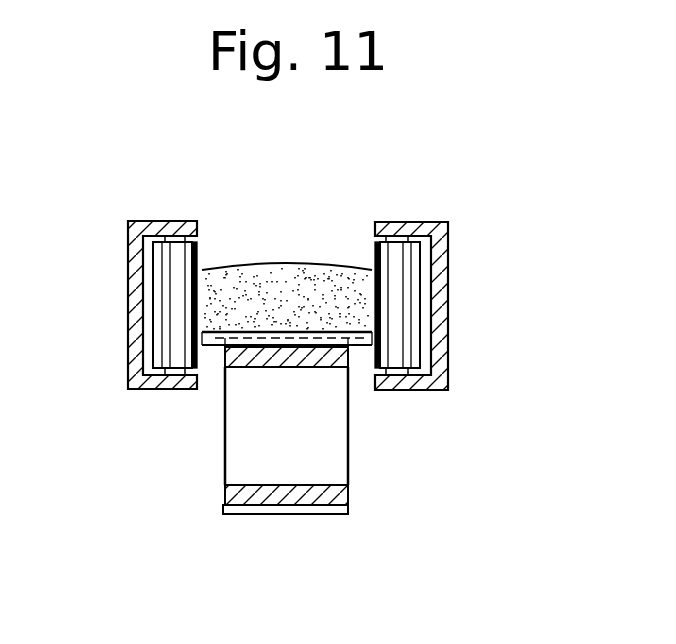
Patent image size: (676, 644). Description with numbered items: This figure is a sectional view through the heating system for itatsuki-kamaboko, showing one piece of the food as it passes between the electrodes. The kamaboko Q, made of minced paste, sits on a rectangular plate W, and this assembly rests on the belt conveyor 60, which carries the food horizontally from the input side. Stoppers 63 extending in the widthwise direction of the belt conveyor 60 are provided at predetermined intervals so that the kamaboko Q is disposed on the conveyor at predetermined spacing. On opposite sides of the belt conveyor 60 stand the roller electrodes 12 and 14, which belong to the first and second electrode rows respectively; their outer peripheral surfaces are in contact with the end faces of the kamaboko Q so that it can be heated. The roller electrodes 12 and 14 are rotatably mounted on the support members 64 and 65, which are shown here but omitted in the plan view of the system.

The roller electrode 12 is at (407, 302).
The roller electrode 14 is at (167, 300).
The belt conveyor 60 is at (348, 494).
The stopper 63 is at (275, 350).
The support member 64 is at (400, 382).
The support member 65 is at (147, 380).
The kamaboko Q is at (282, 262).
The rectangular plate W is at (217, 347).